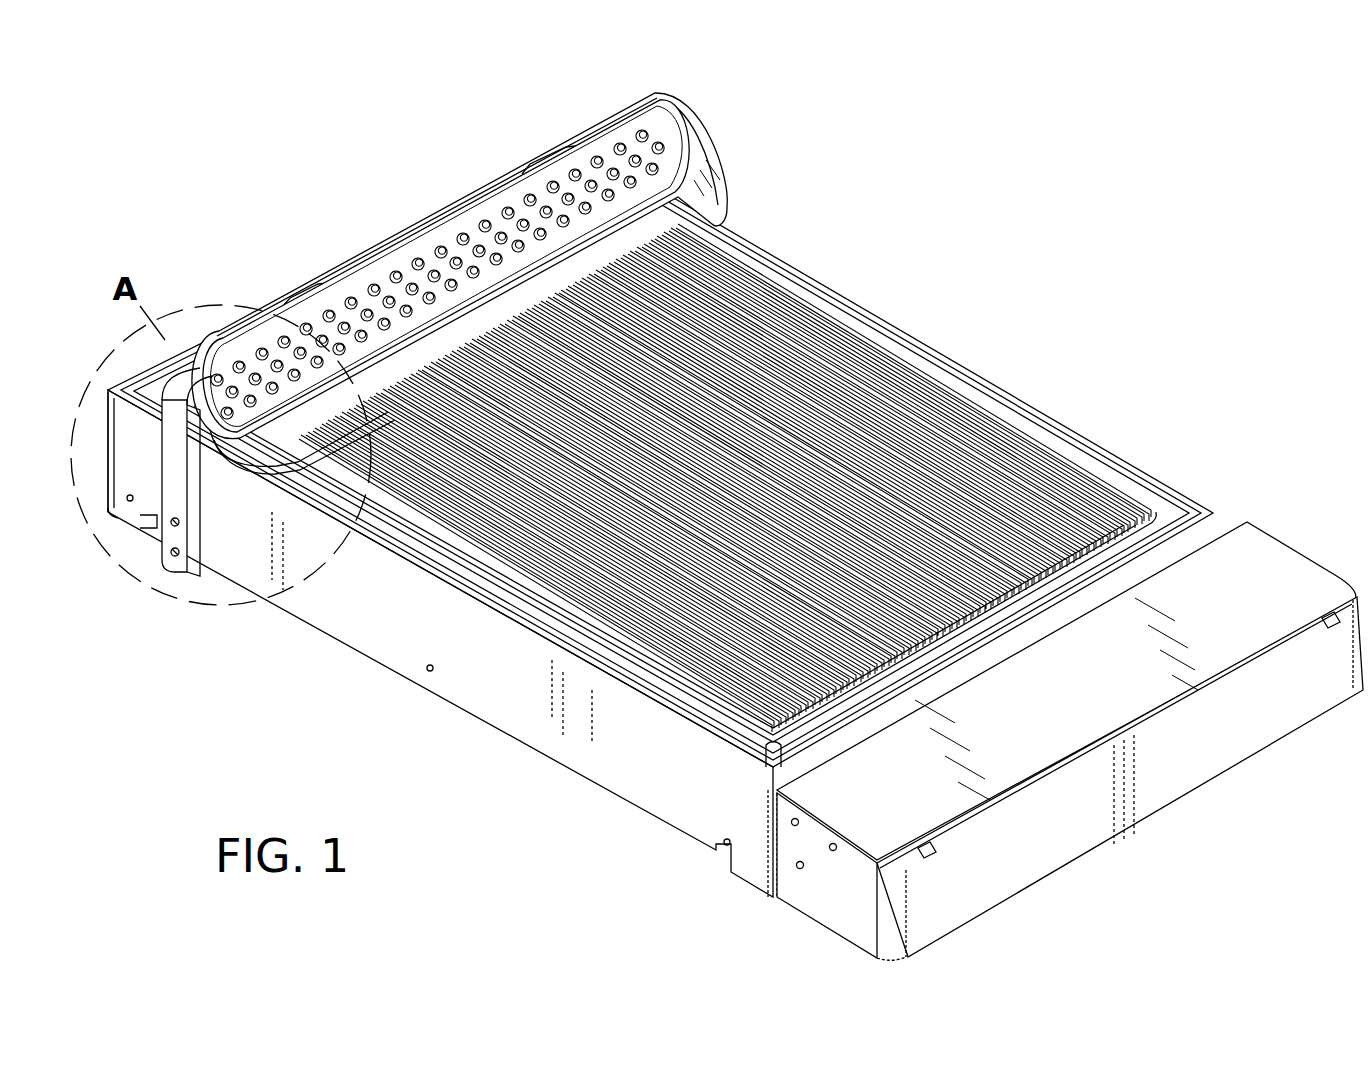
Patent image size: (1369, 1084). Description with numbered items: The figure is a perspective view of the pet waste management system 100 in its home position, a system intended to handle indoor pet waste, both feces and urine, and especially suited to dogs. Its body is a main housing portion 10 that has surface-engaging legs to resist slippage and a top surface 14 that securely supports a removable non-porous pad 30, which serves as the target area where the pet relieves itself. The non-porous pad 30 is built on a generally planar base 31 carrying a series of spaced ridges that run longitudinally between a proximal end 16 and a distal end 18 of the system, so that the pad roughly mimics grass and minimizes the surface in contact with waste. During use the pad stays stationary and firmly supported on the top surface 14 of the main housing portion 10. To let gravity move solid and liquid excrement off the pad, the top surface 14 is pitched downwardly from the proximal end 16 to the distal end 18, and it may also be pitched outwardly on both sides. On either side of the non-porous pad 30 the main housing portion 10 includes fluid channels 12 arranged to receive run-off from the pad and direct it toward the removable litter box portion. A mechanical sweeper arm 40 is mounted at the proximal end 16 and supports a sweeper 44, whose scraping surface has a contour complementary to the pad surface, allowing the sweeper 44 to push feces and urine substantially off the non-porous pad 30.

The pet waste management system 100 is at (373, 153).
The main housing portion 10 is at (358, 627).
The fluid channels 12 is at (972, 378).
The top surface 14 is at (772, 793).
The proximal end 16 is at (338, 245).
The distal end 18 is at (1163, 846).
The non-porous pad 30 is at (760, 385).
The planar base 31 is at (1170, 503).
The mechanical sweeper arm 40 is at (173, 497).
The sweeper 44 is at (650, 105).